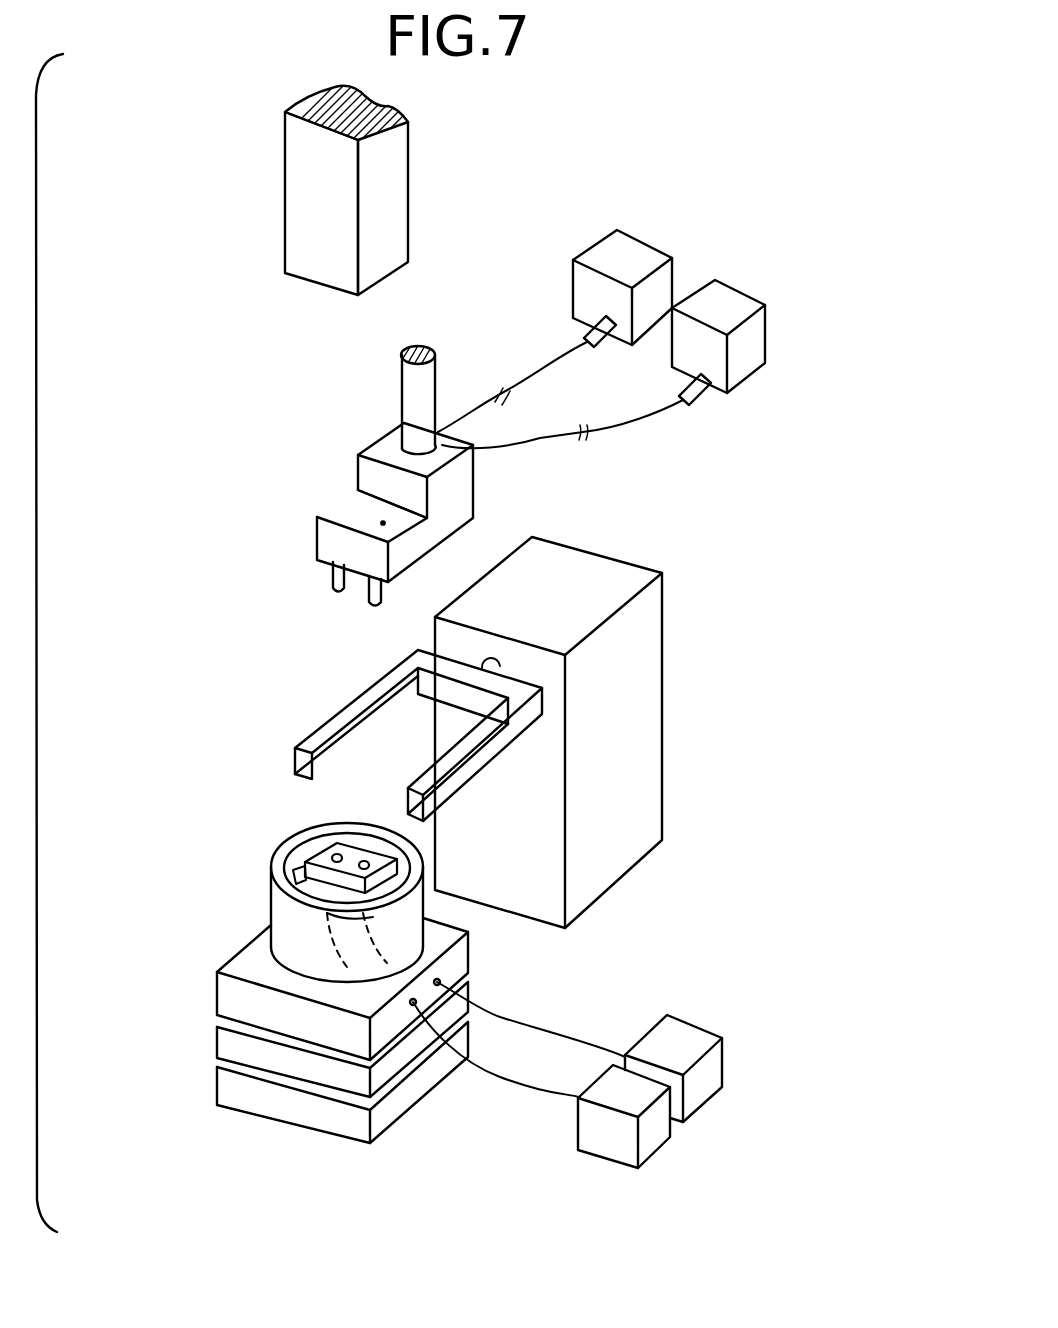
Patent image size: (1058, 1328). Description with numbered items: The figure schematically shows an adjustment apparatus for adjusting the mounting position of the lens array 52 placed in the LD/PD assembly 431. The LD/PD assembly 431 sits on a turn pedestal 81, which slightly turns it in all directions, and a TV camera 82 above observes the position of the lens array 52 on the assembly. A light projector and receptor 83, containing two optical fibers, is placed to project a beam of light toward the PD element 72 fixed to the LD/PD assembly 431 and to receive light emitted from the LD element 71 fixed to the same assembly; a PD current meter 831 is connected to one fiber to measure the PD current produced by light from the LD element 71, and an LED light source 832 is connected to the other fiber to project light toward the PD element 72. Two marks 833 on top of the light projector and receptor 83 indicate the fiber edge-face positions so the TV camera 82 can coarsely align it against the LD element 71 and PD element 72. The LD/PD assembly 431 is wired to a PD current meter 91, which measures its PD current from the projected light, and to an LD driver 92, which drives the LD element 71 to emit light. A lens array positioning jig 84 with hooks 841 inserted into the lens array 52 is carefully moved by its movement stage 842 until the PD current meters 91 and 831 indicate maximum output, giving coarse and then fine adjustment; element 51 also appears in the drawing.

The TV camera 82 is at (410, 160).
The PD current meter 831 is at (615, 230).
The LED light source 832 is at (714, 280).
The light projector and receptor 83 is at (300, 465).
The marks 833 is at (342, 513).
The lens array positioning jig 84 is at (663, 712).
The movement stage 842 is at (607, 535).
The lens array adjustment hooks 841 is at (300, 793).
The lens array 52 is at (356, 850).
The LD/PD substrate 51 is at (300, 843).
The LD/PD assembly 431 is at (236, 910).
The LD element 71 is at (327, 913).
The PD element 72 is at (373, 917).
The turn pedestal 81 is at (236, 1120).
The PD current meter 91 is at (747, 1047).
The LD driver 92 is at (657, 1150).